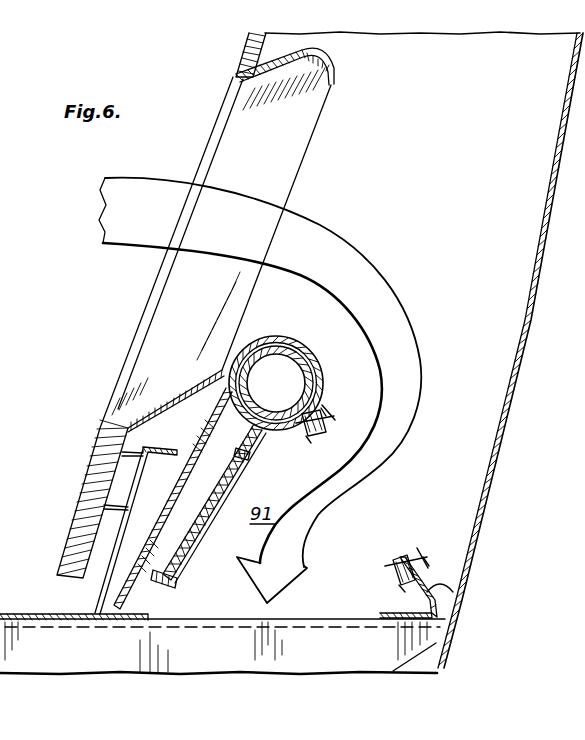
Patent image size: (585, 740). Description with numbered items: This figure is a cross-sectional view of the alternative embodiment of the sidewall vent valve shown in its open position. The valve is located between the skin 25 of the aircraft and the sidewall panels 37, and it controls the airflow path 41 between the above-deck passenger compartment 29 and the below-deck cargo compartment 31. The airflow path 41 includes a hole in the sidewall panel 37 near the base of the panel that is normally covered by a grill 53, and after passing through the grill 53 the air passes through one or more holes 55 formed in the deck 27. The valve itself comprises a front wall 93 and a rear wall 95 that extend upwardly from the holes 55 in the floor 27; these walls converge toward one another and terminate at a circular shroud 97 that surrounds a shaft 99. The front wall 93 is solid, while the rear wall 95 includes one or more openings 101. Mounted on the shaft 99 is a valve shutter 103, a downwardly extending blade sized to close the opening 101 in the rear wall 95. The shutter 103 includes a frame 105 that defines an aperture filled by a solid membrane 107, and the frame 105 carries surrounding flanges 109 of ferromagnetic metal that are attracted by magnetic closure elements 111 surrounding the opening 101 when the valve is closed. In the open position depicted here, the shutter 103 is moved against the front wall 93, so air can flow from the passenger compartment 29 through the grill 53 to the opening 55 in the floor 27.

The skin 25 is at (535, 296).
The deck 27 is at (10, 618).
The passenger compartment 29 is at (128, 300).
The cargo compartment 31 is at (260, 711).
The sidewall panel 37 is at (247, 46).
The airflow path 41 is at (358, 240).
The grill 53 is at (232, 76).
The hole 55 is at (378, 613).
The front wall 93 is at (163, 507).
The rear wall 95 is at (455, 596).
The circular shroud 97 is at (313, 352).
The shaft 99 is at (278, 338).
The opening 101 is at (328, 428).
The valve shutter 103 is at (199, 446).
The frame 105 is at (219, 490).
The solid membrane 107 is at (194, 533).
The flange 109 is at (246, 454).
The magnetic closure element 111 is at (313, 442).